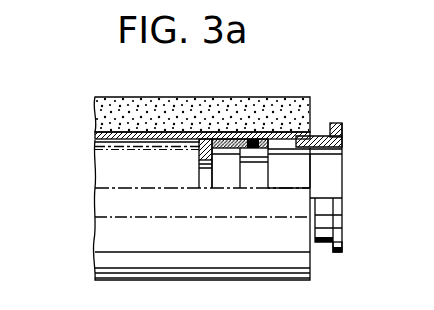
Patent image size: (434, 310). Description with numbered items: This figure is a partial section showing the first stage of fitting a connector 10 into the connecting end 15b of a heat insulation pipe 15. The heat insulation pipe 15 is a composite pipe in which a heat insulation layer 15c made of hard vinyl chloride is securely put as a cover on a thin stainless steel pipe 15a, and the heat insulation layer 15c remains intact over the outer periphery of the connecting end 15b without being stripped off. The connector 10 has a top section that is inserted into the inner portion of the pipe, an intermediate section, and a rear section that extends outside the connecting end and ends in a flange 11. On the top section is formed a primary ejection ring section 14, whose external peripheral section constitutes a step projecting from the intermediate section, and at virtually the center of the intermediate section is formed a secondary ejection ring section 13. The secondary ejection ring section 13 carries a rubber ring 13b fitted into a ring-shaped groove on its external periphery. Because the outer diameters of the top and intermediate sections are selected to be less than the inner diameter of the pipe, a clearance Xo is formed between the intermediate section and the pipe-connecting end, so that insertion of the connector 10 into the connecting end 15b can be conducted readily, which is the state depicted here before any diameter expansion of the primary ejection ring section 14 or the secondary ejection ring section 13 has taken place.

The connector 10 is at (381, 151).
The flange 11 is at (338, 252).
The secondary ejection ring section 13 is at (264, 170).
The rubber ring 13b is at (252, 140).
The primary ejection ring section 14 is at (199, 152).
The heat insulation pipe 15 is at (129, 97).
The thin stainless steel pipe 15a is at (110, 143).
The connecting end 15b is at (311, 136).
The heat insulation layer 15c is at (101, 118).
The clearance Xo is at (273, 138).